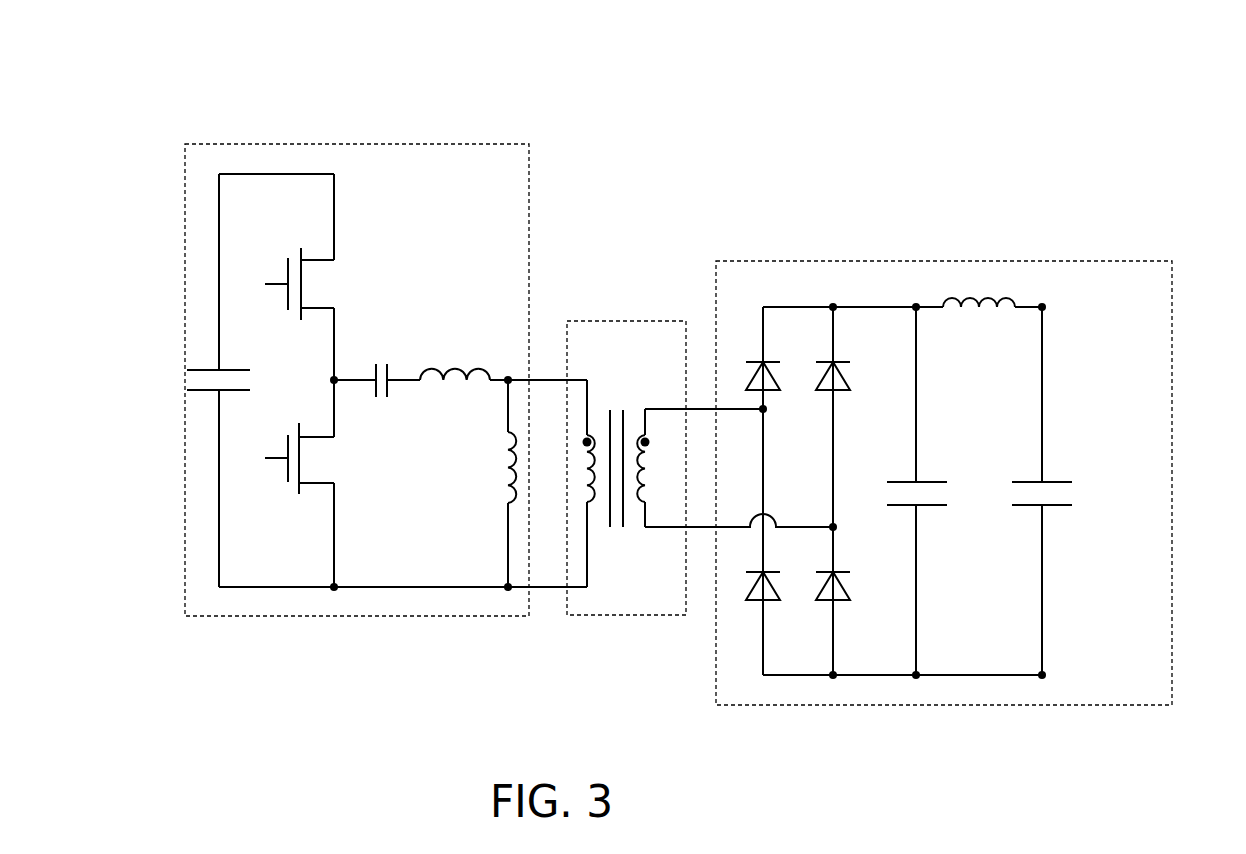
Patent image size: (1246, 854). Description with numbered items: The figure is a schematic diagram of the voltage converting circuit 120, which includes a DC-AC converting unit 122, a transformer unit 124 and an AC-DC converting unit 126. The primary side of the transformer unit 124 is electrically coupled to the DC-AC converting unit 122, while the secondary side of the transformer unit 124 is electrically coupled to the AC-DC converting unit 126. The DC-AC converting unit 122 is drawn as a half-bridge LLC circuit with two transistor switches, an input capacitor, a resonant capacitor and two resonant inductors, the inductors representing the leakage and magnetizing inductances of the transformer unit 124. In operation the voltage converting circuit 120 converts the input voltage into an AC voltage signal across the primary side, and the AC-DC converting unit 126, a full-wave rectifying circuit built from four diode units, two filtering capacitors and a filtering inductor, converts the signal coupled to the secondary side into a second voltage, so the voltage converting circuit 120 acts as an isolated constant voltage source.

The voltage converting circuit 120 is at (1216, 50).
The DC-AC converting unit 122 is at (450, 143).
The transformer unit 124 is at (655, 321).
The AC-DC converting unit 126 is at (920, 261).